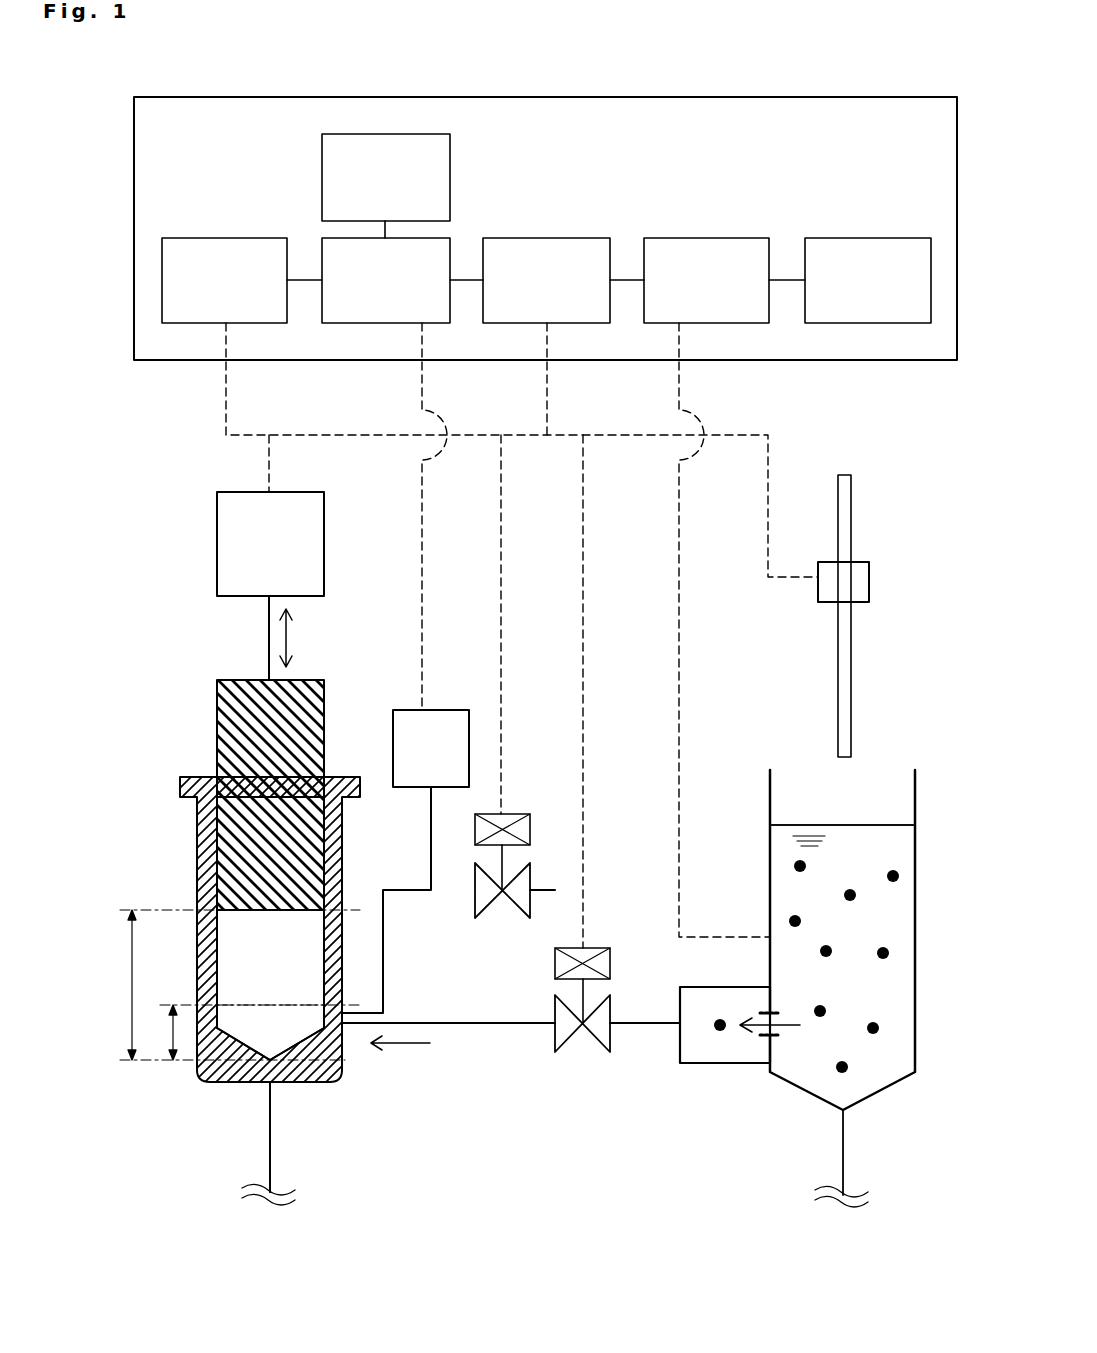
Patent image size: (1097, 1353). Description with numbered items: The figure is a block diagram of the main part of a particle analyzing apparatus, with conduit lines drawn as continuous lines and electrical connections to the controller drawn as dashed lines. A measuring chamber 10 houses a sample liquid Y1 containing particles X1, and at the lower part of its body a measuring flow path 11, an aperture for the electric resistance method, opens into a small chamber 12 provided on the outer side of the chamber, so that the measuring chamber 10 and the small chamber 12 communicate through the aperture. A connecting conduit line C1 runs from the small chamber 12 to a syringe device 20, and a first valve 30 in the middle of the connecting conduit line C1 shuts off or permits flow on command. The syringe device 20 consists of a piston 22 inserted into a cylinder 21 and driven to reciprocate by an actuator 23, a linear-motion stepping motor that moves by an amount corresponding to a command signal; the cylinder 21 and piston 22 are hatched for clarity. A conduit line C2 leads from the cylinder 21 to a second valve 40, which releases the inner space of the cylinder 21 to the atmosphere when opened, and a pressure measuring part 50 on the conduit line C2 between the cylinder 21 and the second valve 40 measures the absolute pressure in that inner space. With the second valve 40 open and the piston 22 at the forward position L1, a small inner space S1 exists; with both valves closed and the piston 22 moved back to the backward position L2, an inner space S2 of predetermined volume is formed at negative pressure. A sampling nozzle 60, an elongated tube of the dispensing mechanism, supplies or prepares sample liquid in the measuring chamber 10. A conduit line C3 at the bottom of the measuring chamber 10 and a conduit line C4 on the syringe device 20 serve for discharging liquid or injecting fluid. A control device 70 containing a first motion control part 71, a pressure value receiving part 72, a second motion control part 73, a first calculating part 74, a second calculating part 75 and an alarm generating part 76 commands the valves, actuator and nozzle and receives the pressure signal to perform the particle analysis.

The measuring chamber 10 is at (770, 880).
The measuring flow path 11 is at (764, 1040).
The small chamber 12 is at (690, 1065).
The syringe device 20 is at (152, 463).
The cylinder 21 is at (198, 860).
The piston 22 is at (217, 697).
The actuator 23 is at (225, 540).
The first valve 30 is at (590, 948).
The second valve 40 is at (509, 815).
The pressure measuring part 50 is at (433, 710).
The sampling nozzle 60 is at (845, 538).
The control device 70 is at (777, 106).
The first motion control part 71 is at (224, 280).
The pressure value receiving part 72 is at (386, 280).
The second motion control part 73 is at (546, 280).
The first calculating part 74 is at (706, 280).
The second calculating part 75 is at (868, 280).
The alarm generating part 76 is at (386, 177).
The connecting conduit line C1 is at (640, 1028).
The conduit line C2 is at (388, 963).
The conduit line C3 is at (845, 1180).
The conduit line C4 is at (268, 1134).
The forward position L1 is at (180, 1005).
The backward position L2 is at (152, 905).
The inner space S1 is at (163, 1030).
The inner space S2 is at (130, 983).
The particles X1 is at (890, 953).
The sample liquid Y1 is at (895, 848).